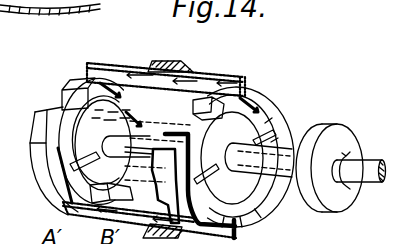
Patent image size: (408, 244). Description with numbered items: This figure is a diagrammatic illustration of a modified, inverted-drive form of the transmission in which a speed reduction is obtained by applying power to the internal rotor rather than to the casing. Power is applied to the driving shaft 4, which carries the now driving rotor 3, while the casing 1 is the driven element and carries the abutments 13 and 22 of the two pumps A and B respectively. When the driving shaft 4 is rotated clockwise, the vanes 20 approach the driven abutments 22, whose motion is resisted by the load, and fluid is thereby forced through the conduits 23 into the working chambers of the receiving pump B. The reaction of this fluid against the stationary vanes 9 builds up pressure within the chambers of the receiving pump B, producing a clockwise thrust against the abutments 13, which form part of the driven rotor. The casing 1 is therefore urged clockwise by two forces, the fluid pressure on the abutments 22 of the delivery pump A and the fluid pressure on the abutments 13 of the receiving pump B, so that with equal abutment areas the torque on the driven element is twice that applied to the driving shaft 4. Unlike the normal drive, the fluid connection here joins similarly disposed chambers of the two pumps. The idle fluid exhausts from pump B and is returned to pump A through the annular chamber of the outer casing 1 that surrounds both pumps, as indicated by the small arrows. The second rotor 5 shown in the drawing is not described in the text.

The casing 1 is at (156, 63).
The driving rotor 3 is at (132, 145).
The driving shaft 4 is at (355, 166).
The rotor disc 5 is at (243, 158).
The stationary vanes 9 is at (266, 124).
The abutments 13 is at (246, 102).
The vanes 20 is at (62, 165).
The abutments 22 is at (74, 83).
The conduits 23 is at (114, 104).
The delivery pump A is at (166, 65).
The receiving pump B is at (167, 76).